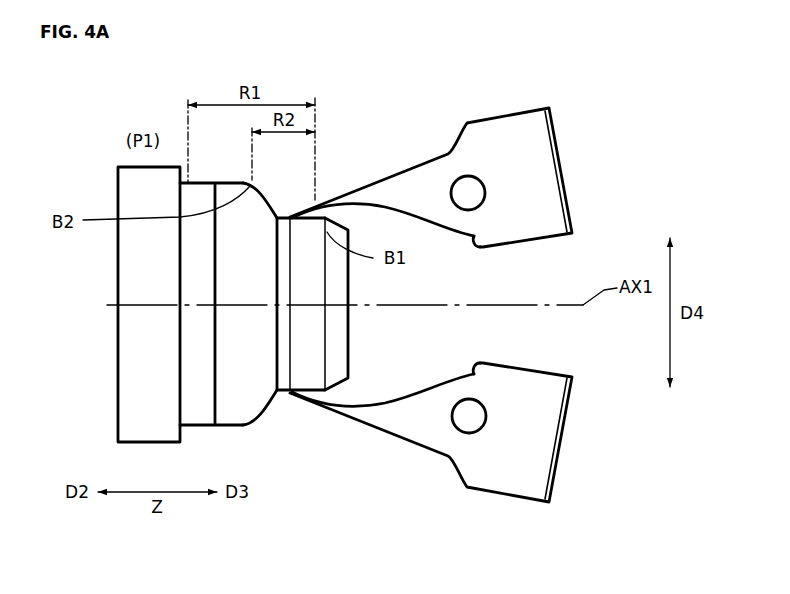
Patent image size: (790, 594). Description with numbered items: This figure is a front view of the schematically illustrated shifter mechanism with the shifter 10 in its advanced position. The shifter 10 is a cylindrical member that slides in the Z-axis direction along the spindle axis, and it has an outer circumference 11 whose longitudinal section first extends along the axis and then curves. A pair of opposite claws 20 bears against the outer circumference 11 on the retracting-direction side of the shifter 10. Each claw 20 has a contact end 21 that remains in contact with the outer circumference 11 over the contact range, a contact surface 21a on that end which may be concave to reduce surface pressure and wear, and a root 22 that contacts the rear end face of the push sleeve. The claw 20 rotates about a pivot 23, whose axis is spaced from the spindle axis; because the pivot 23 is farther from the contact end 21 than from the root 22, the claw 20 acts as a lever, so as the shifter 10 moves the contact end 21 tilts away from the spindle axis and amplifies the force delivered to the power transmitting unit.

The shifter 10 is at (116, 180).
The outer circumference 11 is at (250, 194).
The claw 20 is at (566, 143).
The contact end 21 is at (293, 214).
The contact surface 21a is at (323, 228).
The root 22 is at (472, 246).
The pivot 23 is at (455, 180).